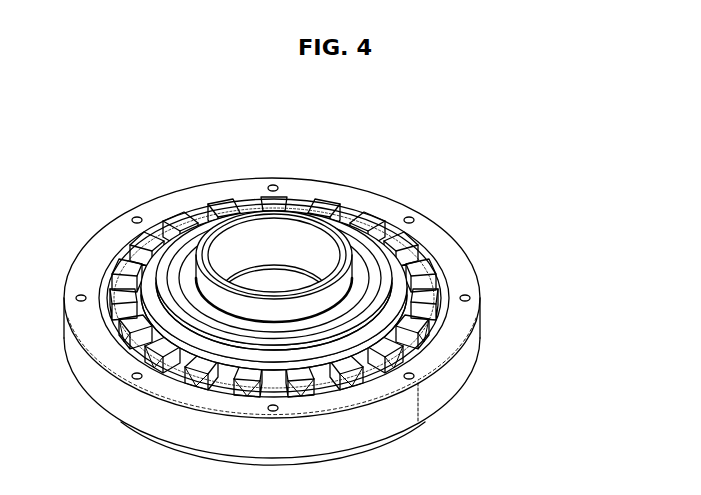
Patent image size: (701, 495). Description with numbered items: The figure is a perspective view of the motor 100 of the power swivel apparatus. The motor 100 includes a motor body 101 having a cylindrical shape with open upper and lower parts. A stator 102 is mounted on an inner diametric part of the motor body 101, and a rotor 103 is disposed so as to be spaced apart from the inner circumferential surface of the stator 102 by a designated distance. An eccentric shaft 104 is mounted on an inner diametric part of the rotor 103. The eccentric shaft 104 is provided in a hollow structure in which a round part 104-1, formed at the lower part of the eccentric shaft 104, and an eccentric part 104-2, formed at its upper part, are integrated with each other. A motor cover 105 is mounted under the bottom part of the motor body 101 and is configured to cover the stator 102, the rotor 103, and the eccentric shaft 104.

The motor 100 is at (478, 333).
The motor body 101 is at (467, 357).
The stator 102 is at (117, 257).
The rotor 103 is at (160, 262).
The eccentric shaft 104 is at (387, 289).
The round part 104-1 is at (380, 302).
The eccentric part 104-2 is at (365, 253).
The motor cover 105 is at (443, 407).